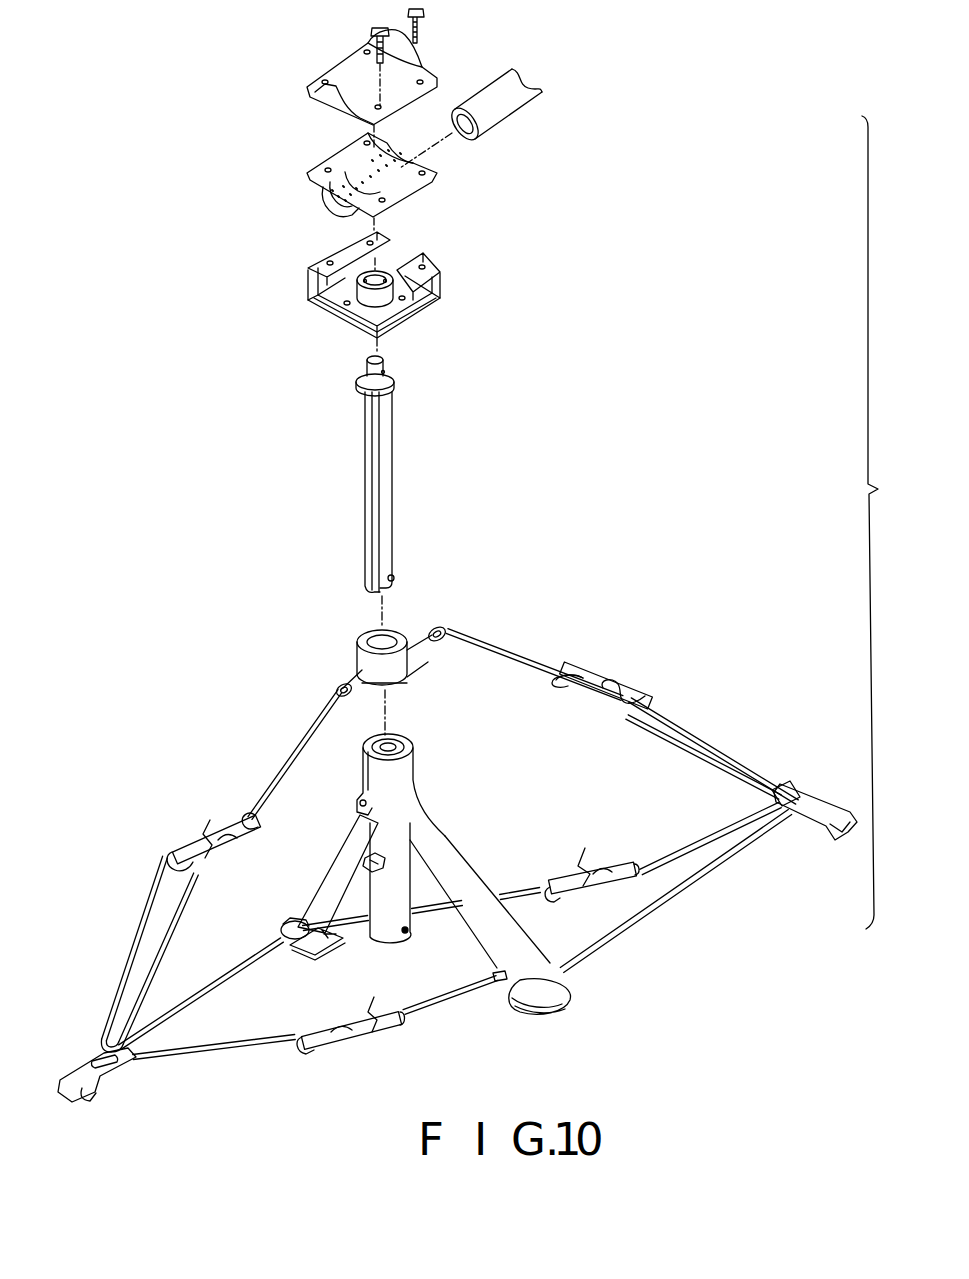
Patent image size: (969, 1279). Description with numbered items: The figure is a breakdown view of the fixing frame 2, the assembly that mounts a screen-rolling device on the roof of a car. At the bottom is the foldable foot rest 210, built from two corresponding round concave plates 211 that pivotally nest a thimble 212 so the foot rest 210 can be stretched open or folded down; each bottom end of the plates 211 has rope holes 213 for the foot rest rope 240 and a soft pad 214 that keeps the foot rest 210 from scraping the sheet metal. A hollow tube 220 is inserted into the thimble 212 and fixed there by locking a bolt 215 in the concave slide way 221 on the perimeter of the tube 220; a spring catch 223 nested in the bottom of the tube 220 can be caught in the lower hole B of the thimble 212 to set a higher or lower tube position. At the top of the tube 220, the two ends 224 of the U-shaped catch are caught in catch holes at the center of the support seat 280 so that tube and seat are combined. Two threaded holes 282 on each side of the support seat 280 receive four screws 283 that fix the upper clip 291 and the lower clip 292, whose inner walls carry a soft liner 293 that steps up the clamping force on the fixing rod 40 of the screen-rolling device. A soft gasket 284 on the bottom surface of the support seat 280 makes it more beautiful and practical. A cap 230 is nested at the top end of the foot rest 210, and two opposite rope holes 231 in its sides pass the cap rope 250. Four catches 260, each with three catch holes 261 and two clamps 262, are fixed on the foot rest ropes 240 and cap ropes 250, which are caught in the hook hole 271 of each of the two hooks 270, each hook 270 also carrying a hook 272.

The fixing frame 2 is at (881, 522).
The fixing rod 40 is at (517, 110).
The foldable foot rest 210 is at (442, 820).
The round concave plates 211 is at (330, 893).
The thimble 212 is at (387, 932).
The rope holes 213 is at (297, 919).
The soft pad 214 is at (305, 955).
The bolt 215 is at (363, 857).
The hollow tube 220 is at (383, 473).
The concave slide way 221 is at (373, 527).
The spring catch 223 is at (396, 578).
The ends of the U-shaped catch 224 is at (387, 376).
The cap 230 is at (367, 634).
The rope holes 231 is at (350, 676).
The foot rest rope 240 is at (515, 873).
The cap rope 250 is at (705, 730).
The catches 260 is at (613, 673).
The catch holes 261 is at (575, 686).
The clamps 262 is at (248, 830).
The hook 270 is at (822, 787).
The hook hole 271 is at (102, 1064).
The hook 272 is at (88, 1104).
The support seat 280 is at (307, 285).
The threaded holes 282 is at (327, 259).
The screws 283 is at (424, 18).
The soft gasket 284 is at (340, 319).
The upper clip 291 is at (340, 67).
The lower clip 292 is at (415, 185).
The soft liner 293 is at (340, 93).
The lower hole B is at (417, 938).